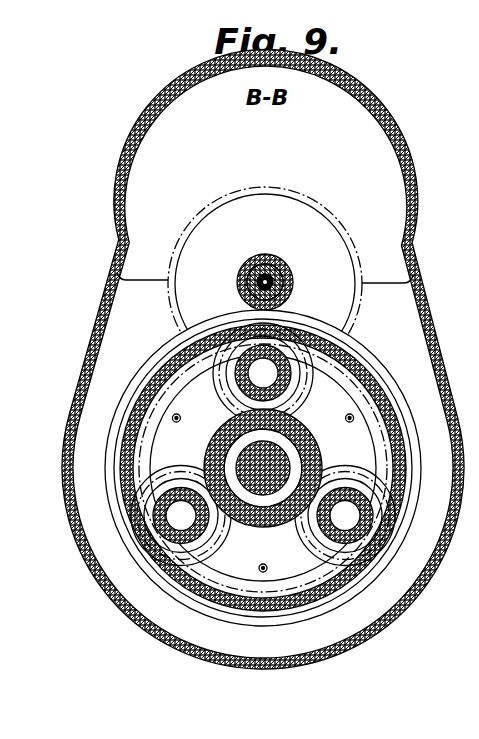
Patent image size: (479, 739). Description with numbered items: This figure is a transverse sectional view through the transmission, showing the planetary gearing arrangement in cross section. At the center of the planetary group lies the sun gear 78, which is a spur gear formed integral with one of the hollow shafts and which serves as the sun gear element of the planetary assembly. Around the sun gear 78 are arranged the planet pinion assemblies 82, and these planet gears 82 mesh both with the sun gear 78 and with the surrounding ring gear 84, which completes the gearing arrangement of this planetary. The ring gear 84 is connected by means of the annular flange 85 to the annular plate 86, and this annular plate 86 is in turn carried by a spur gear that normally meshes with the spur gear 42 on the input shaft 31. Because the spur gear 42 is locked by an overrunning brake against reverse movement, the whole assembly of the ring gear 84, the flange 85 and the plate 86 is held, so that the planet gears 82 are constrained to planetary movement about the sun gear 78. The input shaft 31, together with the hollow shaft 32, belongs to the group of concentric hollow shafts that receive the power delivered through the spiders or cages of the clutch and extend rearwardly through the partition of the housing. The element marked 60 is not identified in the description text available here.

The hollow shaft 31 is at (262, 258).
The hollow shaft 32 is at (284, 286).
The spur gear 42 is at (180, 236).
The main shaft 60 is at (280, 458).
The sun gear 78 is at (206, 456).
The planet pinion assembly 82 is at (244, 361).
The ring gear 84 is at (218, 588).
The annular flange 85 is at (105, 446).
The annular plate 86 is at (287, 572).